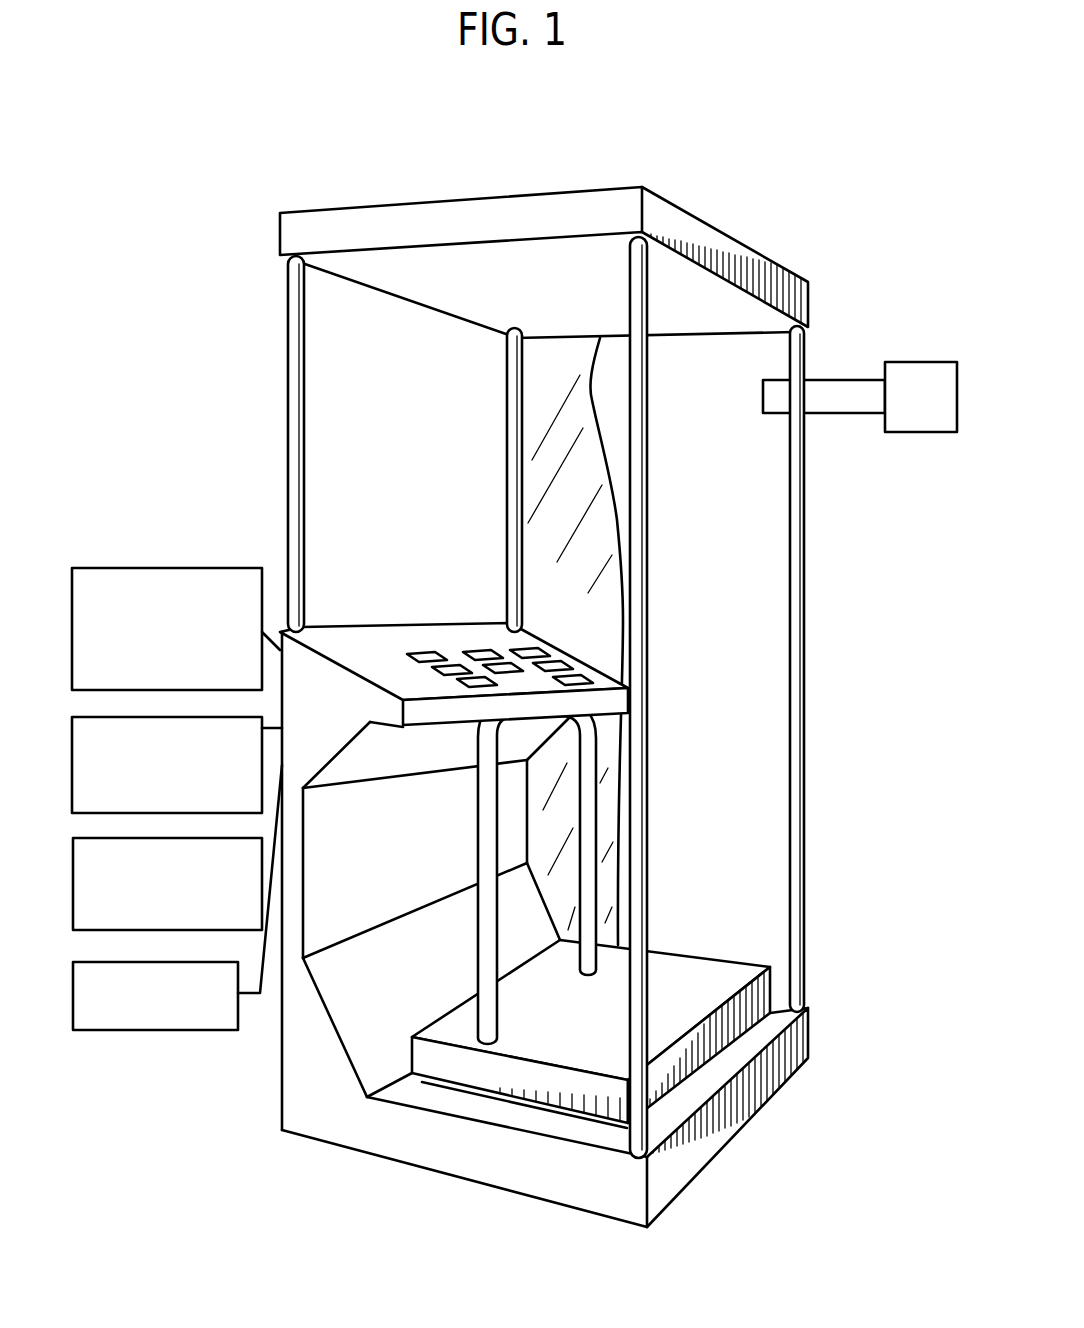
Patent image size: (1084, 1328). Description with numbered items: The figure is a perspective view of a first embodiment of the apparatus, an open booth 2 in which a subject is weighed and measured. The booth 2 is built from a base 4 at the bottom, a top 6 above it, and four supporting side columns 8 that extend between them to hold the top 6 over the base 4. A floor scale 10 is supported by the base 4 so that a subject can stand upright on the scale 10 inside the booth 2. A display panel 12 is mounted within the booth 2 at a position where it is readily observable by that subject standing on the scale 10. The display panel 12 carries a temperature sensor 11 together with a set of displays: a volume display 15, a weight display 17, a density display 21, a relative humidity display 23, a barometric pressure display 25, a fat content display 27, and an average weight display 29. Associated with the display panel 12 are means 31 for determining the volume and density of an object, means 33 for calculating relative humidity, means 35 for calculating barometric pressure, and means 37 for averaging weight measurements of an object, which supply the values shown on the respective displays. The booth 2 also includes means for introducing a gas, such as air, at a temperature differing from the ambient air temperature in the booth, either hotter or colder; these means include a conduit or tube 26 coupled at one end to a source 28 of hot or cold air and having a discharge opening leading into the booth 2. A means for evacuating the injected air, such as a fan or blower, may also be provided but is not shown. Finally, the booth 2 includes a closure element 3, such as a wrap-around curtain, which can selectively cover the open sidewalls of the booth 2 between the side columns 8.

The open booth 2 is at (897, 719).
The closure element 3 is at (575, 641).
The base 4 is at (545, 929).
The top 6 is at (544, 232).
The supporting side columns 8 is at (569, 697).
The floor scale 10 is at (610, 1016).
The temperature sensor 11 is at (536, 614).
The display panel 12 is at (416, 674).
The volume display 15 is at (564, 635).
The weight display 17 is at (588, 653).
The density display 21 is at (449, 619).
The relative humidity display 23 is at (492, 616).
The barometric pressure display 25 is at (389, 622).
The conduit or tube 26 is at (824, 374).
The fat content display 27 is at (413, 660).
The source of hot or cold air 28 is at (921, 397).
The average weight display 29 is at (450, 720).
The means for determining the volume and density of an object 31 is at (176, 604).
The means for calculating relative humidity 33 is at (177, 778).
The means for calculating barometric pressure 35 is at (167, 899).
The means for averaging weight measurements of an object 37 is at (177, 916).